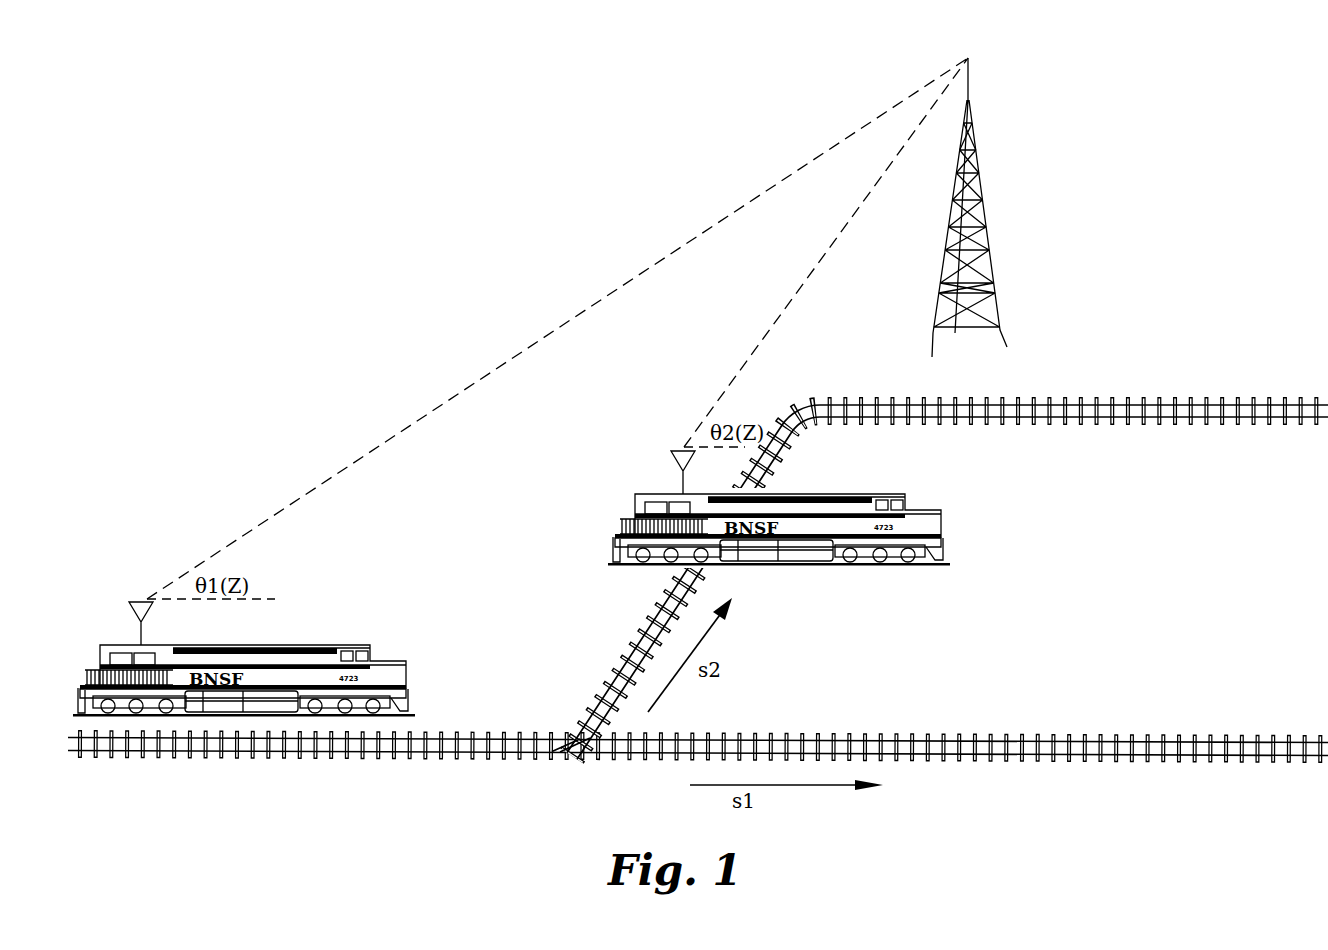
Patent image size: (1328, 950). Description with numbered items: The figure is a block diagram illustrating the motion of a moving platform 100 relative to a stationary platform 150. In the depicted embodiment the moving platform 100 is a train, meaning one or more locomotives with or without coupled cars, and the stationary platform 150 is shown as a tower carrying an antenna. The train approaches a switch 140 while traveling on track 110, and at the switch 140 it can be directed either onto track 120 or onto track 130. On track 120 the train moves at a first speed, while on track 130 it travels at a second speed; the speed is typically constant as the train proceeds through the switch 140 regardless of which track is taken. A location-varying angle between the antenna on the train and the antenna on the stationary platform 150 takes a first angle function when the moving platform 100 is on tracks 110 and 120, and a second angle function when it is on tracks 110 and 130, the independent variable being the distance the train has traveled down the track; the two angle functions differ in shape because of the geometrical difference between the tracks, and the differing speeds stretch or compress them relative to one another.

The moving platform 100 is at (100, 643).
The track 110 is at (190, 764).
The track 120 is at (953, 776).
The track 130 is at (989, 440).
The switch 140 is at (563, 762).
The stationary platform 150 is at (1003, 300).